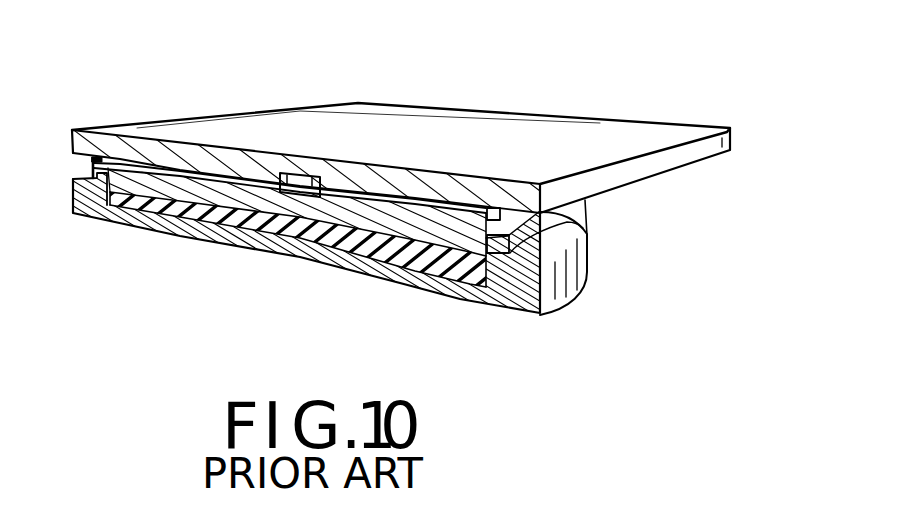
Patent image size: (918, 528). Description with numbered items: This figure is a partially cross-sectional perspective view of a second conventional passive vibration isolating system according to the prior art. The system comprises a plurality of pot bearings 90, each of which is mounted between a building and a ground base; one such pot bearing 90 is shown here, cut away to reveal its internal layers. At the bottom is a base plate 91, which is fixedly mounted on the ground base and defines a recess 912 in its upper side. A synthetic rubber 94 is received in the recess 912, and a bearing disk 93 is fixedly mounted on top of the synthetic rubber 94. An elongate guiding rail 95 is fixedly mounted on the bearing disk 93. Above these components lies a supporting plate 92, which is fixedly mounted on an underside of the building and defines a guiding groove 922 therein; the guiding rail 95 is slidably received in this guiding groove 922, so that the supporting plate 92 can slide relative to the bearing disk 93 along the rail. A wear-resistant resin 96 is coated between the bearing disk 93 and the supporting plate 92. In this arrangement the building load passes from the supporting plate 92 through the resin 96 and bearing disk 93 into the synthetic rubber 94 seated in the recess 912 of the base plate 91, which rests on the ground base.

The pot bearing 90 is at (405, 206).
The base plate 91 is at (324, 262).
The recess 912 is at (400, 261).
The supporting plate 92 is at (732, 127).
The guiding groove 922 is at (306, 180).
The bearing disk 93 is at (411, 232).
The synthetic rubber 94 is at (203, 226).
The guiding rail 95 is at (312, 188).
The wear-resistant resin 96 is at (190, 167).